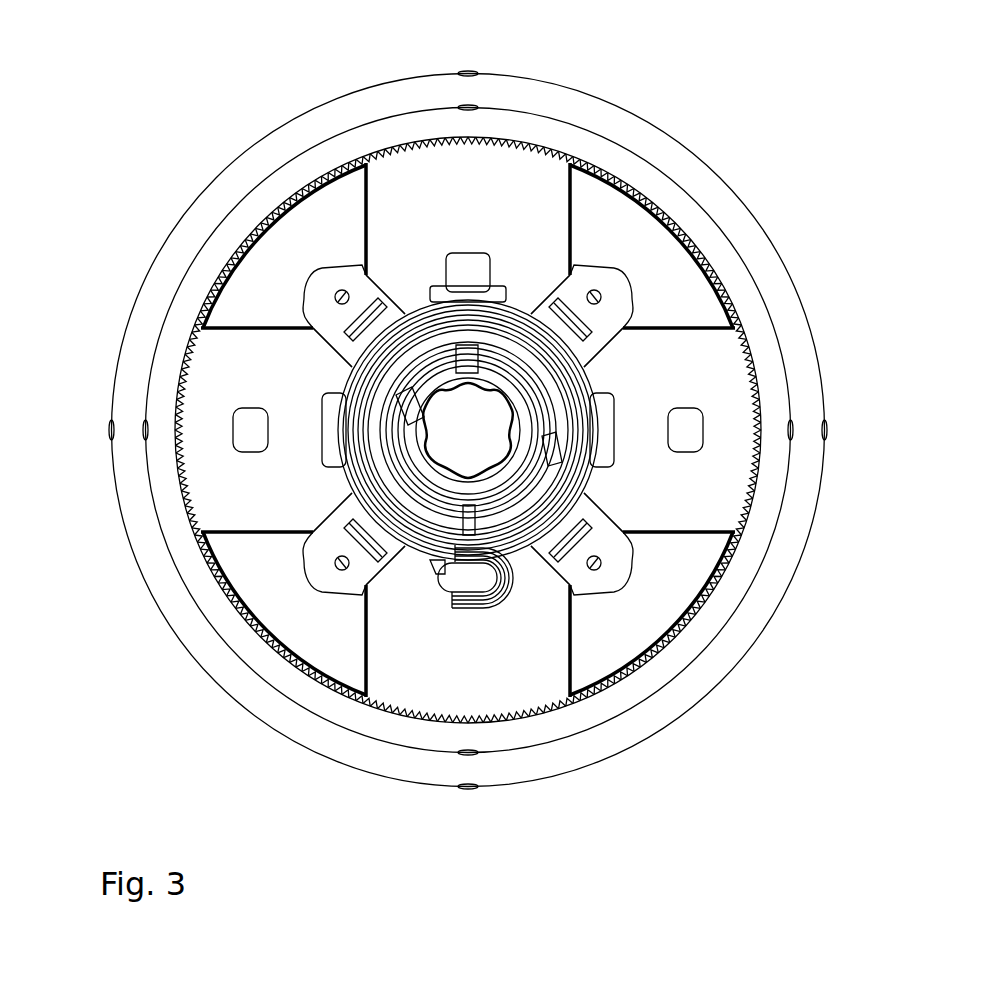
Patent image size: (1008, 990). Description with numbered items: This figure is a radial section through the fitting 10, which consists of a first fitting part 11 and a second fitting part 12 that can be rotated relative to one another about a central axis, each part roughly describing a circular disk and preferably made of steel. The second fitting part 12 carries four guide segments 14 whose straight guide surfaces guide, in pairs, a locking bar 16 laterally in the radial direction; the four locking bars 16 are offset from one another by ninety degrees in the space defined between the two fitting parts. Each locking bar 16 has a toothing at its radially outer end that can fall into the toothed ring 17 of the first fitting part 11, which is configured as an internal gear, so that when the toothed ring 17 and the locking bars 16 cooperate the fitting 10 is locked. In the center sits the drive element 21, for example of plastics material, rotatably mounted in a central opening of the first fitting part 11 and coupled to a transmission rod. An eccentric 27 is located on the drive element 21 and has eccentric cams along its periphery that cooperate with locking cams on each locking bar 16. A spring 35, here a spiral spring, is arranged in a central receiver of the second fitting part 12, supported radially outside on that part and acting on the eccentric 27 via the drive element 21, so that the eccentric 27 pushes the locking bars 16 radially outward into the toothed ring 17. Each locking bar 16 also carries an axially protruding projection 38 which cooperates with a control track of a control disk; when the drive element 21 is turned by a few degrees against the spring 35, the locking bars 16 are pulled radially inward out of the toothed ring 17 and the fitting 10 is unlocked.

The fitting 10 is at (685, 103).
The first fitting part 11 is at (178, 296).
The second fitting part 12 is at (618, 103).
The guide segments 14 is at (290, 250).
The locking bars 16 is at (530, 180).
The toothed ring 17 is at (292, 673).
The drive element 21 is at (502, 487).
The eccentric 27 is at (533, 472).
The spring 35 is at (500, 607).
The projection 38 is at (458, 268).